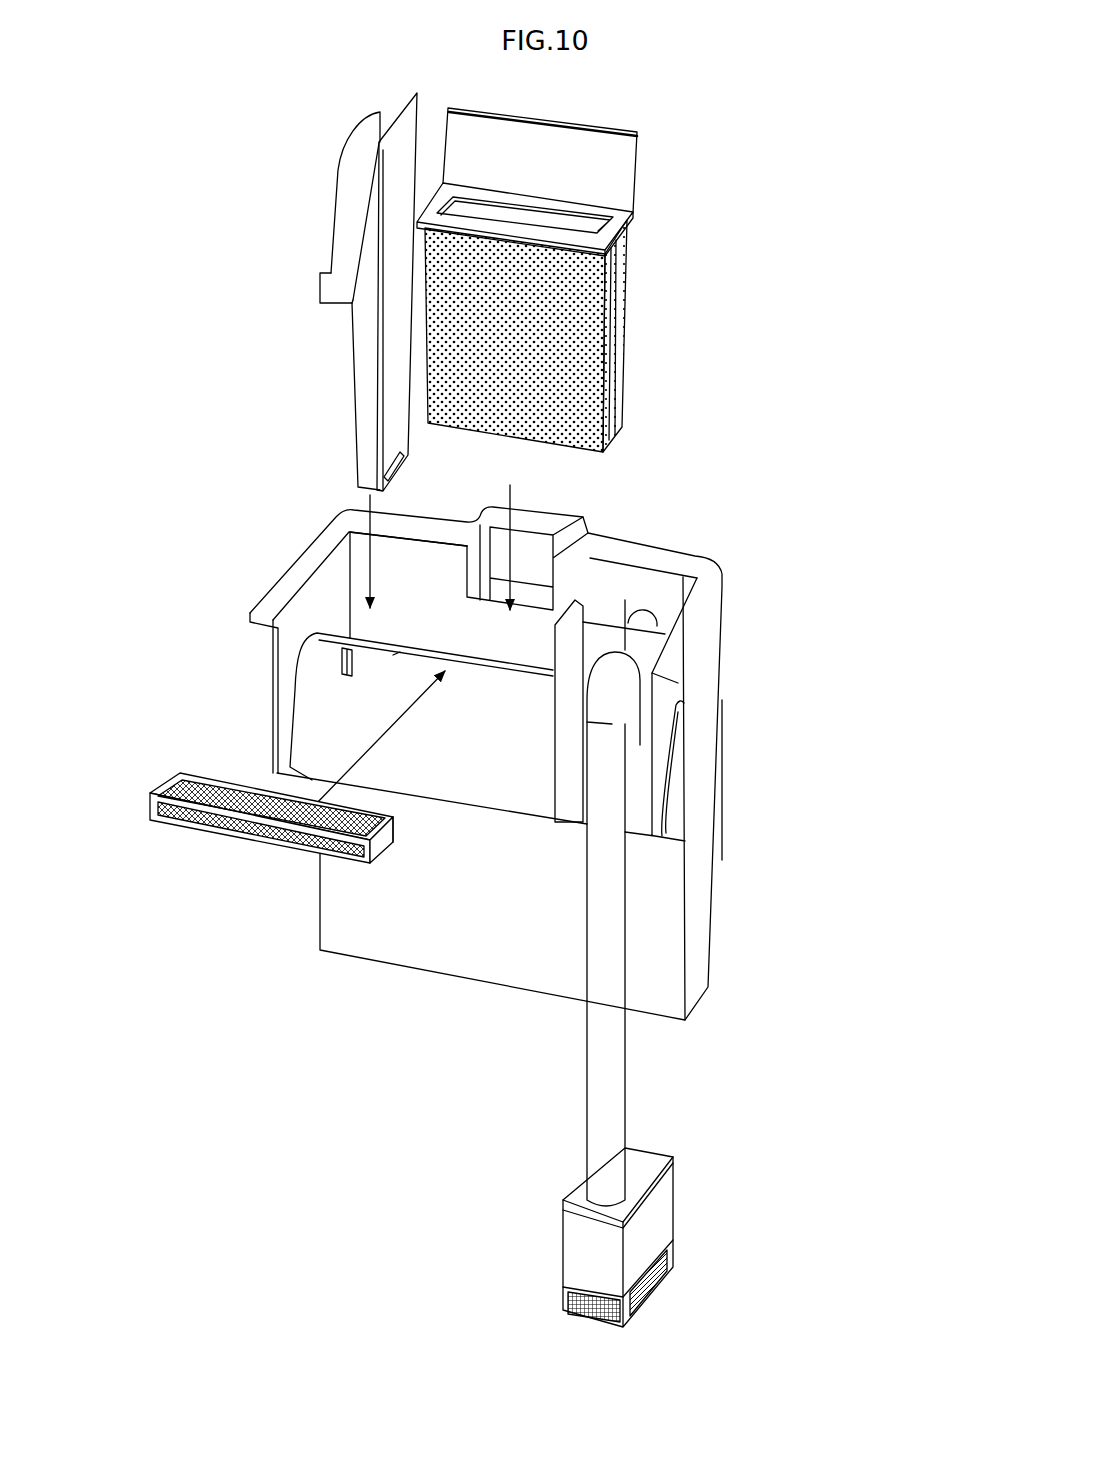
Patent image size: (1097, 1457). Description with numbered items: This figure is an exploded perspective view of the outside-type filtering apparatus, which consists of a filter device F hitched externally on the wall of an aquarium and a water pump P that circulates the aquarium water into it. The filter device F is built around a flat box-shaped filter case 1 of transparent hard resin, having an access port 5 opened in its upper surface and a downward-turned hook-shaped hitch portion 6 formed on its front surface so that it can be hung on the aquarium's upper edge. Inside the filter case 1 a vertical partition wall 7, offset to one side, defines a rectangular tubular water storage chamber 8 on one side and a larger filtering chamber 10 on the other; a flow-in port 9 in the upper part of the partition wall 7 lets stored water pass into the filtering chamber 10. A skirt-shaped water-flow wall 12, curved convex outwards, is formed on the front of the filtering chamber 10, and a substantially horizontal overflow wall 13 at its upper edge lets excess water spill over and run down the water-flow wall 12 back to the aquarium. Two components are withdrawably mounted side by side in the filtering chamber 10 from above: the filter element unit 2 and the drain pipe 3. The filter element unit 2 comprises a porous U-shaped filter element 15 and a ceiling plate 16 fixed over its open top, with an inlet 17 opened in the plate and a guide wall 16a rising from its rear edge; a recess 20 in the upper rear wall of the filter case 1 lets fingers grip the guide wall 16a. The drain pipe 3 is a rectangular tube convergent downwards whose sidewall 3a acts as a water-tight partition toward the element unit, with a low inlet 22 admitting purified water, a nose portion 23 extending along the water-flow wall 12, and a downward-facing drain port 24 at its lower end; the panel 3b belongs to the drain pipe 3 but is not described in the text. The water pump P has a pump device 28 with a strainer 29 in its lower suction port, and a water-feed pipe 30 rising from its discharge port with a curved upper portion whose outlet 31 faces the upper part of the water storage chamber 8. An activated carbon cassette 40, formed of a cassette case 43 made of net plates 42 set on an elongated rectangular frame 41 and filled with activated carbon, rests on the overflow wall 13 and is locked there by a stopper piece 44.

The filter case 1 is at (533, 737).
The filter element unit 2 is at (590, 266).
The drain pipe 3 is at (348, 283).
The sidewall (partition wall) of drain pipe 3a is at (410, 120).
The cover panel 3b is at (377, 127).
The access port 5 is at (641, 606).
The hitch portion 6 is at (660, 780).
The partition wall 7 is at (607, 722).
The water storage chamber 8 is at (683, 583).
The flow-in port 9 is at (562, 608).
The filtering chamber 10 is at (451, 640).
The water-flow wall 12 is at (438, 740).
The overflow wall 13 is at (393, 656).
The filter element 15 is at (627, 330).
The ceiling plate 16 is at (613, 220).
The guide wall 16a is at (588, 140).
The inlet 17 is at (497, 213).
The recess 20 is at (535, 537).
The inlet 22 is at (402, 457).
The nose portion 23 is at (330, 273).
The drain port 24 is at (333, 307).
The pump device 28 is at (577, 1200).
The strainer 29 is at (575, 1305).
The water-feed pipe 30 is at (593, 1052).
The outlet 31 is at (645, 600).
The activated carbon cassette 40 is at (288, 926).
The frame 41 is at (385, 857).
The net plates 42 is at (317, 875).
The cassette case 43 is at (283, 1080).
The stopper piece 44 is at (340, 662).
The filter device F is at (724, 787).
The water pump P is at (633, 1213).